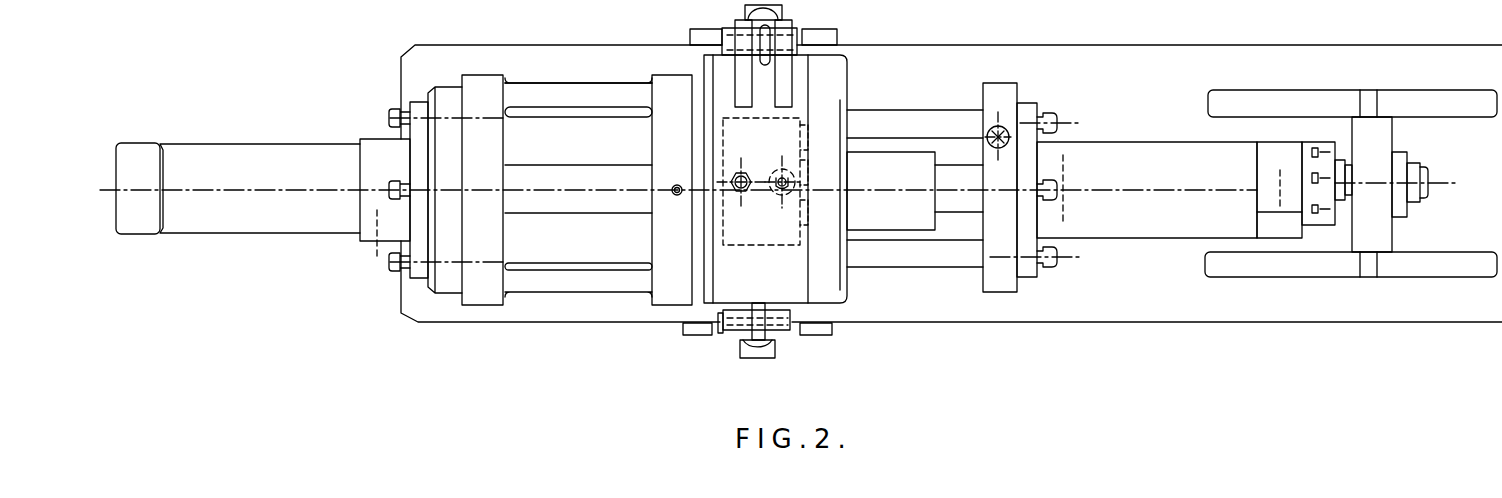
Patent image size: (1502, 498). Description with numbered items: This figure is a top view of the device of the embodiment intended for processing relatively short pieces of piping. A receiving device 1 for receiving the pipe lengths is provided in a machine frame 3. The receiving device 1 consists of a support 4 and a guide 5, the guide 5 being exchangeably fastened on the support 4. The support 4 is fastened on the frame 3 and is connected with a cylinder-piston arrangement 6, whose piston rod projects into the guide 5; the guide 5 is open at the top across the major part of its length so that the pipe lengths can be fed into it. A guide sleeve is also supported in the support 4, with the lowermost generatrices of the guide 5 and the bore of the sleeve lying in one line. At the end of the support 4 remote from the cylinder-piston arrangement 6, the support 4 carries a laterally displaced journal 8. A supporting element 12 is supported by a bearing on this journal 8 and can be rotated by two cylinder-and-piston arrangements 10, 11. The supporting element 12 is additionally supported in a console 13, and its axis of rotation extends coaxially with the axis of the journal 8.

The receiving device 1 is at (545, 72).
The machine frame 3 is at (462, 75).
The support 4 is at (540, 253).
The guide 5 is at (635, 205).
The cylinder-piston arrangement 6 is at (254, 149).
The journal 8 is at (727, 127).
The cylinder-and-piston arrangement 10 is at (800, 24).
The cylinder-and-piston arrangement 11 is at (780, 340).
The supporting element 12 is at (1052, 103).
The console 13 is at (1377, 243).